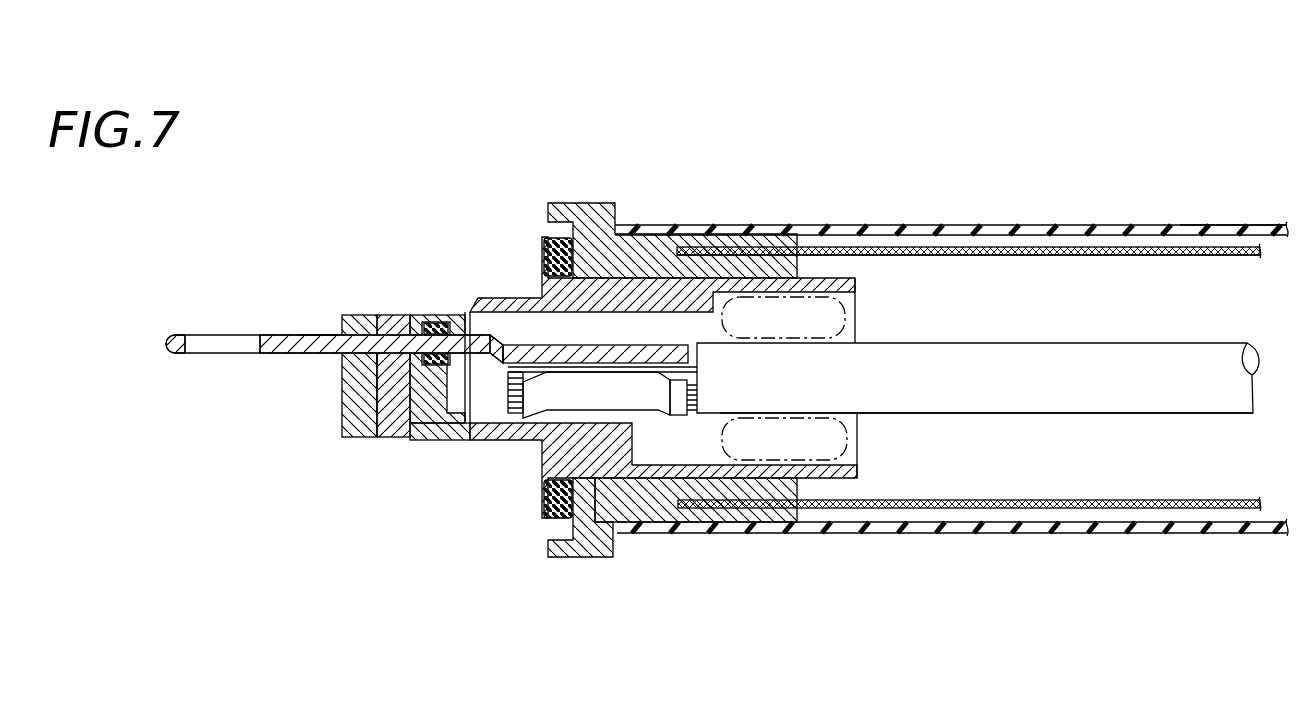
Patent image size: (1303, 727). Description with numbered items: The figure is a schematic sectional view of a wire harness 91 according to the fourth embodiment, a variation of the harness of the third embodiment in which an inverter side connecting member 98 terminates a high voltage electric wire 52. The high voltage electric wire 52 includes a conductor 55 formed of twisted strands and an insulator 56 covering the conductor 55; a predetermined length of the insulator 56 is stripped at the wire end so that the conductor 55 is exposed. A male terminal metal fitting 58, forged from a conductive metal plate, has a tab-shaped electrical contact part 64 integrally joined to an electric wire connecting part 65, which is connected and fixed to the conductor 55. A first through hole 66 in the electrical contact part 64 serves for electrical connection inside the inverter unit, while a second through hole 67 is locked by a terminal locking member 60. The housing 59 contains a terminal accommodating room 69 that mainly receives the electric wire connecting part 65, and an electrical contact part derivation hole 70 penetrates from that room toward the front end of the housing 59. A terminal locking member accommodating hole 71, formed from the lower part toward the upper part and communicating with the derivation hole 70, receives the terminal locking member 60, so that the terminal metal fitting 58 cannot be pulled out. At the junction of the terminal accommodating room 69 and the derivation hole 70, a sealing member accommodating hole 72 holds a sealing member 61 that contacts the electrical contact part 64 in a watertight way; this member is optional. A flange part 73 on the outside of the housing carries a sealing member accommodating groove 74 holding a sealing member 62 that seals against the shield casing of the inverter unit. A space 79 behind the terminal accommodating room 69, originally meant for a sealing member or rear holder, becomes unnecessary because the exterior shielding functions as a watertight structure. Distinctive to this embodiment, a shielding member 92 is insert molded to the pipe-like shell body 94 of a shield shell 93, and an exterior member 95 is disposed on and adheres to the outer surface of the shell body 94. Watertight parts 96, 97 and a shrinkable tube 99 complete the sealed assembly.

The high voltage electric wire 52 is at (1143, 352).
The conductor 55 is at (503, 395).
The insulator 56 is at (1208, 402).
The terminal metal fitting 58 is at (545, 345).
The housing 59 is at (345, 412).
The terminal locking member 60 is at (383, 444).
The sealing member 61 is at (446, 323).
The sealing member 62 is at (540, 506).
The electrical contact part 64 is at (281, 336).
The electric wire connecting part 65 is at (717, 497).
The first through hole 66 is at (202, 336).
The second through hole 67 is at (388, 340).
The terminal accommodating room 69 is at (660, 320).
The electrical contact part derivation hole 70 is at (323, 336).
The terminal locking member accommodating hole 71 is at (383, 374).
The sealing member accommodating hole 72 is at (434, 322).
The flange part 73 is at (568, 560).
The sealing member accommodating groove 74 is at (543, 500).
The space 79 is at (850, 315).
The wire harness 91 is at (921, 150).
The shielding member 92 is at (1205, 259).
The shield shell 93 is at (607, 200).
The shell body 94 is at (668, 500).
The exterior member 95 is at (1100, 226).
The watertight part 96 is at (775, 248).
The watertight part 97 is at (735, 224).
The inverter side connecting member 98 is at (526, 167).
The shrinkable tube 99 is at (1218, 226).